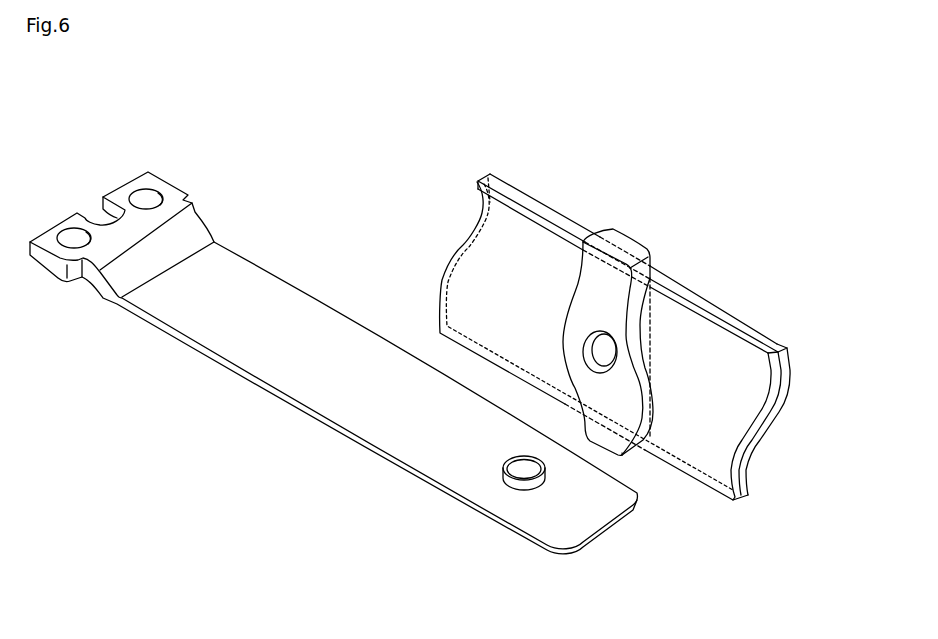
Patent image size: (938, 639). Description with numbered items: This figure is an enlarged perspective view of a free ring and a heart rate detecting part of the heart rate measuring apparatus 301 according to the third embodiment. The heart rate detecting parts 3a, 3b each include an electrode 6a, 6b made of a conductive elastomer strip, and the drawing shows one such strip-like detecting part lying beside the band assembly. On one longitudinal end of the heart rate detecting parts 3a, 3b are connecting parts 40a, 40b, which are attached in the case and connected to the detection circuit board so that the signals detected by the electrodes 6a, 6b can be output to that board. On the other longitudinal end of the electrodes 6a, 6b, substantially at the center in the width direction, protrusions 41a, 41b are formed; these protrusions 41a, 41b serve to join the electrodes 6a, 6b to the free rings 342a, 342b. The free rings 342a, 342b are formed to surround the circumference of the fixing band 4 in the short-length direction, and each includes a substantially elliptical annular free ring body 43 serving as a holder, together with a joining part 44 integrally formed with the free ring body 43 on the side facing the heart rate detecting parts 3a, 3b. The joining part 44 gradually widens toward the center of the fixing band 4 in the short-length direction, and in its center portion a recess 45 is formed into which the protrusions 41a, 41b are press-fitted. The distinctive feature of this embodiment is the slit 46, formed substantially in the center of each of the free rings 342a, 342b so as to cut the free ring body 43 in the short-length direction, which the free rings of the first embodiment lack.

The heart rate detecting part 3a is at (333, 363).
The heart rate detecting part 3b is at (315, 428).
The electrode 6a is at (430, 426).
The electrode 6b is at (440, 476).
The connecting part 40a is at (152, 176).
The connecting part 40b is at (174, 184).
The protrusion 41a is at (546, 527).
The protrusion 41b is at (523, 490).
The heart rate measuring apparatus 301 is at (424, 172).
The fixing band 4 is at (745, 311).
The free ring 342a is at (648, 303).
The free ring 342b is at (639, 231).
The free ring body 43 is at (650, 308).
The joining part 44 is at (643, 373).
The recess 45 is at (586, 360).
The slit 46 is at (647, 338).